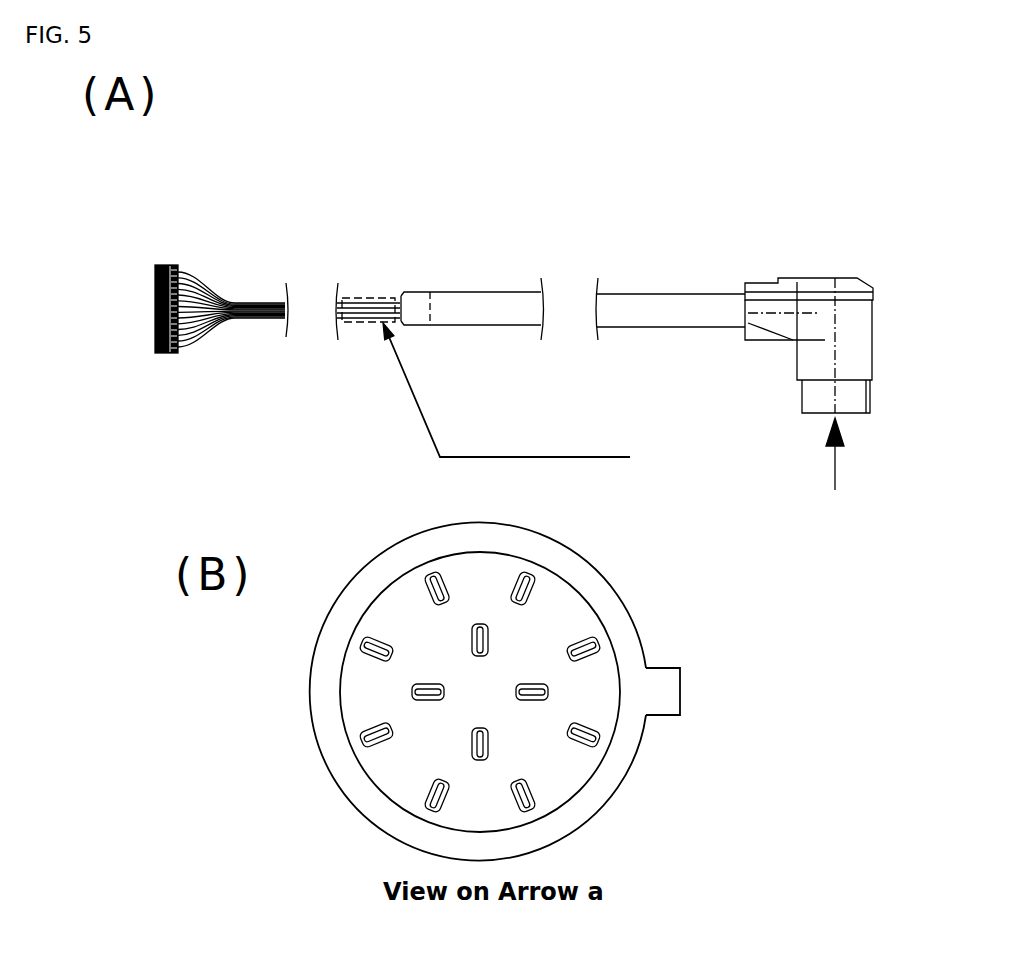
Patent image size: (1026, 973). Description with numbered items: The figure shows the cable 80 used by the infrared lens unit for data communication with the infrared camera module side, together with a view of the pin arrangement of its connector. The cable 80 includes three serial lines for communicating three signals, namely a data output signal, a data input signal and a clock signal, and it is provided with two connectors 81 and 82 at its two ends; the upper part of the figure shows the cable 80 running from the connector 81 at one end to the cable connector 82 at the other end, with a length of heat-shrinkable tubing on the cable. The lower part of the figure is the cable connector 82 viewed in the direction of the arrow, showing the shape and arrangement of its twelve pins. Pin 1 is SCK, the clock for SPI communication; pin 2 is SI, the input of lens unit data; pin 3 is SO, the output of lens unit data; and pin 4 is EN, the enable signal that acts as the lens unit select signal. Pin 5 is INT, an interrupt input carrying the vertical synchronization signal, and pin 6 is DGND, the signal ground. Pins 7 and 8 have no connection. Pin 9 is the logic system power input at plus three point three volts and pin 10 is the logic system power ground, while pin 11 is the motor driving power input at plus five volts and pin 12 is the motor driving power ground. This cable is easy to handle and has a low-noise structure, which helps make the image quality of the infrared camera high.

In FIG. 5A, the cable 80 is at (424, 238).
In FIG. 5A, the connector 81 is at (156, 254).
In FIG. 5A, the cable connector 82 is at (817, 268).
In FIG. 5B, the cable connector 82 is at (532, 691).
In FIG. 5B, the pin 1 (SCK) 1 is at (584, 637).
In FIG. 5B, the pin 2 (SI) 2 is at (531, 589).
In FIG. 5B, the pin 3 (SO) 3 is at (428, 589).
In FIG. 5B, the pin 4 (EN) 4 is at (377, 637).
In FIG. 5B, the pin 5 (INT) 5 is at (377, 749).
In FIG. 5B, the pin 6 (DGND) 6 is at (428, 796).
In FIG. 5B, the pin 7 (NC) 7 is at (532, 796).
In FIG. 5B, the pin 8 (NC) 8 is at (584, 749).
In FIG. 5B, the pin 9 (+3.3 V) 9 is at (480, 628).
In FIG. 5B, the pin 10 (DGND) 10 is at (481, 756).
In FIG. 5B, the pin 11 (+5.0 V) 11 is at (549, 693).
In FIG. 5B, the pin 12 (PGND) 12 is at (412, 693).